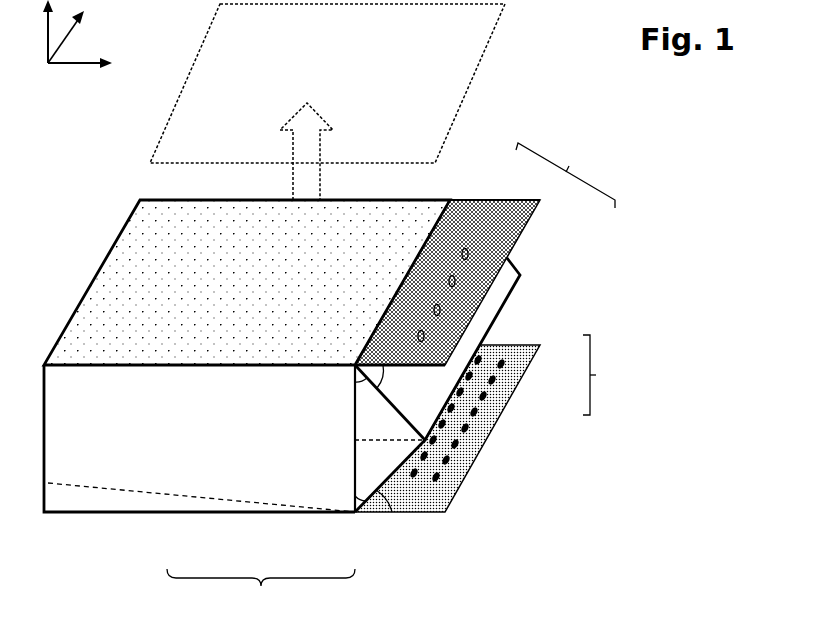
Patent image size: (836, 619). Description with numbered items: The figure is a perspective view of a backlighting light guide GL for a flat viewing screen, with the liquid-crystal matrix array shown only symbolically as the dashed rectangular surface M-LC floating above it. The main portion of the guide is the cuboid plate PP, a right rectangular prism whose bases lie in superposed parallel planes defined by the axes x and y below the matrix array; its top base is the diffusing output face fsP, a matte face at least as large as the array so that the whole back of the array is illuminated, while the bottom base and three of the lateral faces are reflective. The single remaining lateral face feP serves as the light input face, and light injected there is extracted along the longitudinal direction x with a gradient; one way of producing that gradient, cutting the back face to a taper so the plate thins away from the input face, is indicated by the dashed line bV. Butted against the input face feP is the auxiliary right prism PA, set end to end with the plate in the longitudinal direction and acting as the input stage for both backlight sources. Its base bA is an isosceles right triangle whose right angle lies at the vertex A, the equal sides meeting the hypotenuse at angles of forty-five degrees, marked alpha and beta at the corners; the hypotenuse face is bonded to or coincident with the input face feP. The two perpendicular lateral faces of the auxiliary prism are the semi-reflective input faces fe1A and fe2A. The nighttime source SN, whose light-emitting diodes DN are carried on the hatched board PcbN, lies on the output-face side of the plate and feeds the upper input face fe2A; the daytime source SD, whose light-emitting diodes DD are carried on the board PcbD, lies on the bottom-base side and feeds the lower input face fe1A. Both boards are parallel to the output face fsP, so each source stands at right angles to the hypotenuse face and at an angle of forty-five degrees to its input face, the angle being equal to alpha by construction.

The LC matrix array M-LC is at (327, 102).
The longitudinal axis x is at (87, 63).
The axis y is at (72, 31).
The cuboid plate PP is at (247, 385).
The output face fsP is at (247, 282).
The lateral input face feP is at (355, 439).
The taper dashed line bV is at (75, 486).
The auxiliary right prism PA is at (368, 470).
The base of the auxiliary right prism bA is at (377, 415).
The first input face fe1A is at (386, 478).
The second input face fe2A is at (488, 302).
The vertex A is at (428, 434).
The angle alpha is at (362, 439).
The angle beta is at (390, 438).
The guide length GL is at (261, 594).
The nighttime carrier board PcbN is at (474, 269).
The nighttime light-emitting diodes DN is at (487, 222).
The nighttime source SN is at (565, 175).
The daytime carrier board PcbD is at (467, 421).
The daytime light-emitting diodes DD is at (500, 390).
The daytime source SD is at (600, 375).